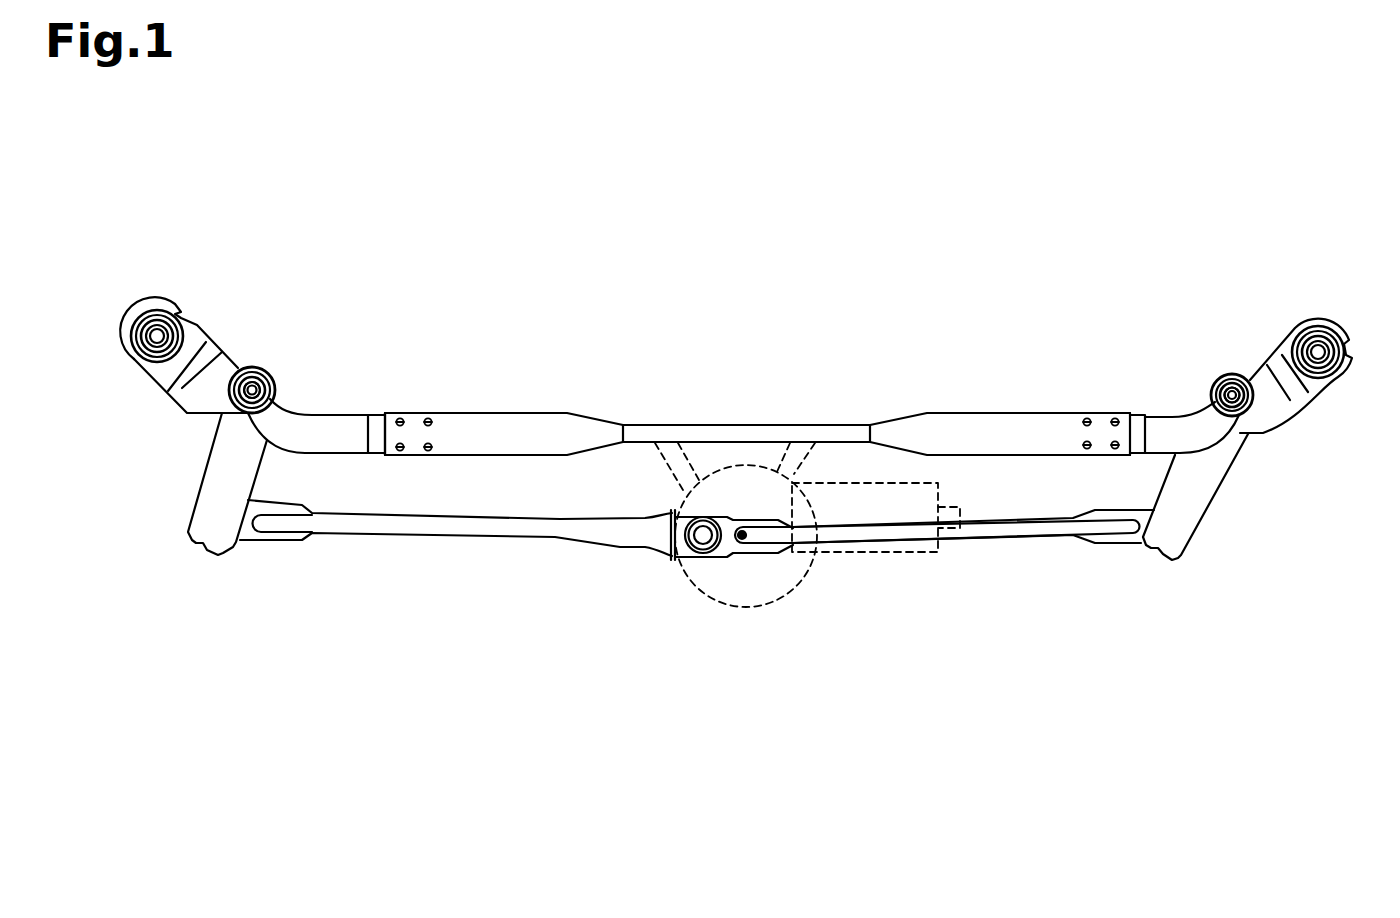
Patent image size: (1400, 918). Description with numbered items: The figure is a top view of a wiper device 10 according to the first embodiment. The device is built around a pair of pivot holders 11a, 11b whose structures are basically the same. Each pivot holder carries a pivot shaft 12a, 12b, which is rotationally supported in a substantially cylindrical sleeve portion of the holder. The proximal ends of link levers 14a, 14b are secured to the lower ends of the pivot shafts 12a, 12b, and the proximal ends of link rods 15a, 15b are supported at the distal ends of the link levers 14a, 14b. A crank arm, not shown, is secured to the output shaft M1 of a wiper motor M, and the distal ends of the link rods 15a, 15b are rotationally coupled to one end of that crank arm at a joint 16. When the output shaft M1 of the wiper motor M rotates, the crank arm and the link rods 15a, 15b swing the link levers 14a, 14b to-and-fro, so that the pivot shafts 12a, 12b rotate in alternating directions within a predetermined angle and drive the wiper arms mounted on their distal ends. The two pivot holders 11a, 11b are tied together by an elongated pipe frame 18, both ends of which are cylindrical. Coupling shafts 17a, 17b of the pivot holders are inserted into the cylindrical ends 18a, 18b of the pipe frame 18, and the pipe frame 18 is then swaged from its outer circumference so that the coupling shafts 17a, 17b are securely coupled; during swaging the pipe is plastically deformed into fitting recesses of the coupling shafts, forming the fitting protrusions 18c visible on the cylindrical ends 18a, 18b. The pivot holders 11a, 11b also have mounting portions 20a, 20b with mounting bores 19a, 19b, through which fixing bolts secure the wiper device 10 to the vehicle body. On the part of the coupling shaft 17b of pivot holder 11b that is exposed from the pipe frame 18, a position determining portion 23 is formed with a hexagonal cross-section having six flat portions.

The wiper device 10 is at (1097, 332).
The pivot holder 11a is at (250, 367).
The pivot holder 11b is at (1227, 376).
The pivot shaft 12a is at (264, 367).
The pivot shaft 12b is at (1246, 411).
The link lever 14a is at (216, 472).
The link lever 14b is at (1203, 496).
The link rod 15a is at (532, 540).
The link rod 15b is at (990, 537).
The joint 16 is at (692, 558).
The coupling shaft 17a is at (337, 413).
The coupling shaft 17b is at (1185, 420).
The pipe frame 18 is at (560, 412).
The cylindrical end 18a is at (386, 442).
The cylindrical end 18b is at (1134, 451).
The fitting protrusion 18c is at (433, 445).
The mounting bore 19a is at (163, 313).
The mounting bore 19b is at (1305, 337).
The mounting portion 20a is at (138, 300).
The mounting portion 20b is at (1360, 308).
The position determining portion 23 is at (376, 414).
The wiper motor M is at (860, 553).
The output shaft M1 is at (743, 553).